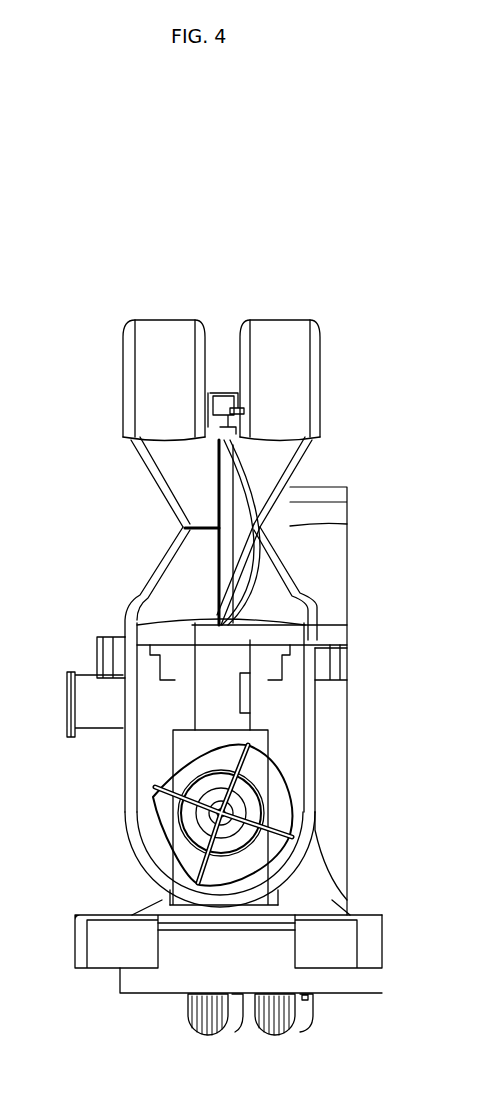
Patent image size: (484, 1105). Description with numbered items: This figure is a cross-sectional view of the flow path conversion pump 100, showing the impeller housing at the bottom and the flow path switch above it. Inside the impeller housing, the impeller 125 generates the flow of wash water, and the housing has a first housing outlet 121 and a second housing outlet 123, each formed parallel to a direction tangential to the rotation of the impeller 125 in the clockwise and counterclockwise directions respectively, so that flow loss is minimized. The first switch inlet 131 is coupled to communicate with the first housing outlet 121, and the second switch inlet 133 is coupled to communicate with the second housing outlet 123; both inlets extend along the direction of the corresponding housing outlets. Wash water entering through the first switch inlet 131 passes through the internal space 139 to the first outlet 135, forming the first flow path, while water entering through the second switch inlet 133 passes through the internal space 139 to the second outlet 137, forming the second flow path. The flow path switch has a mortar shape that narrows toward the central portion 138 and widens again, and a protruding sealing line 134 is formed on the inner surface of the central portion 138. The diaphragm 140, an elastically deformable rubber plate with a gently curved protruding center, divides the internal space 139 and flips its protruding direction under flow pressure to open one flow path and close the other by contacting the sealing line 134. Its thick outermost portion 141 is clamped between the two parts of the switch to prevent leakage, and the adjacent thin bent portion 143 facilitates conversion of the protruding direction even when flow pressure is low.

The flow path conversion pump 100 is at (66, 322).
The first housing outlet 121 is at (142, 770).
The second housing outlet 123 is at (305, 755).
The impeller 125 is at (292, 826).
The first switch inlet 131 is at (140, 633).
The second switch inlet 133 is at (290, 622).
The sealing line 134 is at (185, 525).
The first outlet 135 is at (130, 367).
The second outlet 137 is at (321, 370).
The central portion 138 is at (185, 530).
The internal space 139 is at (170, 450).
The diaphragm 140 is at (290, 478).
The outermost portion 141 is at (242, 432).
The bent portion 143 is at (290, 637).